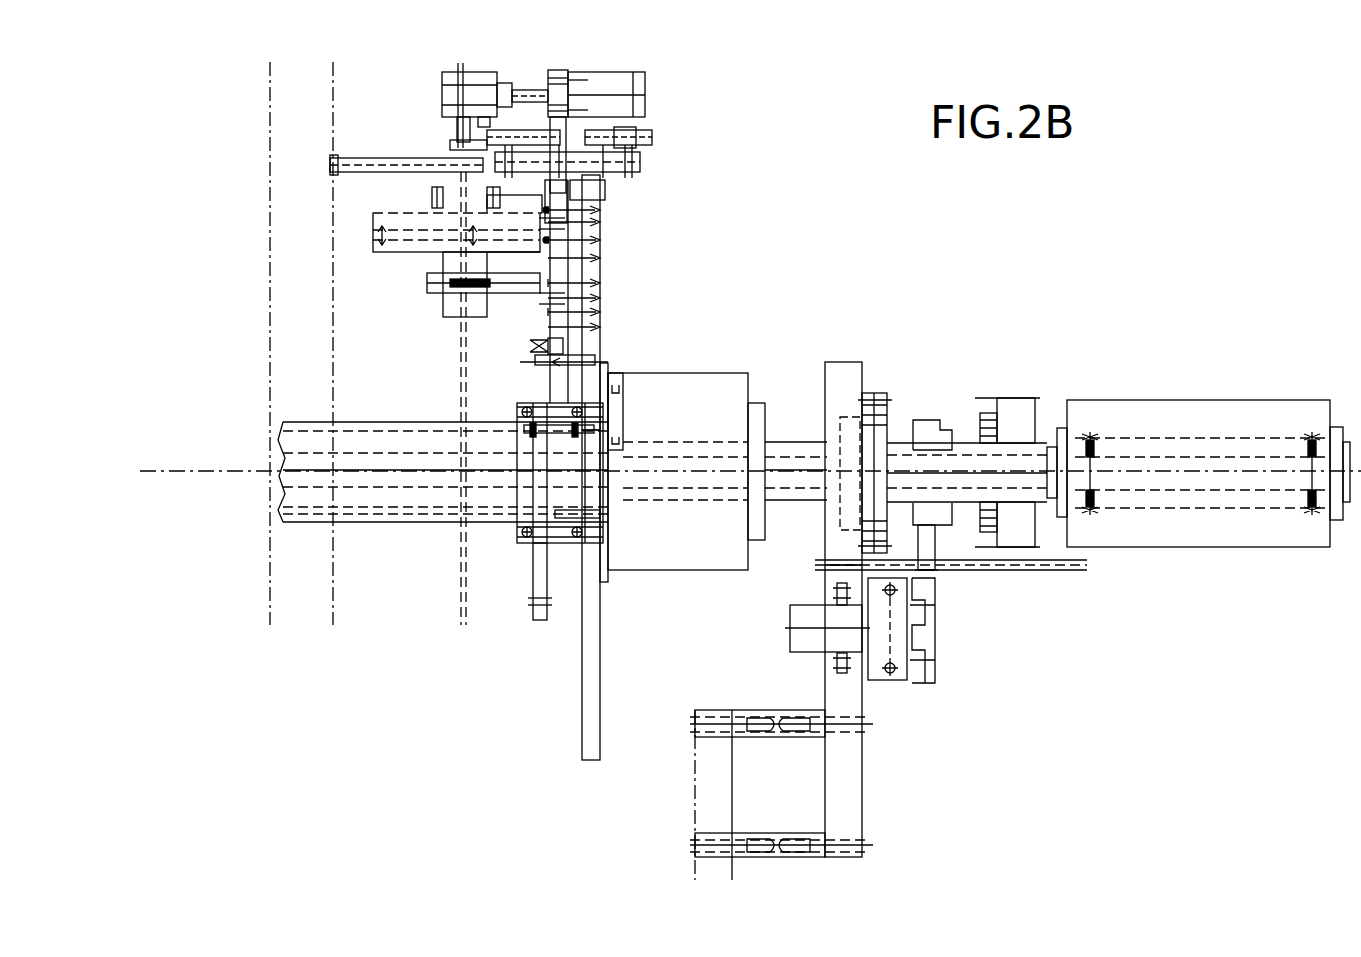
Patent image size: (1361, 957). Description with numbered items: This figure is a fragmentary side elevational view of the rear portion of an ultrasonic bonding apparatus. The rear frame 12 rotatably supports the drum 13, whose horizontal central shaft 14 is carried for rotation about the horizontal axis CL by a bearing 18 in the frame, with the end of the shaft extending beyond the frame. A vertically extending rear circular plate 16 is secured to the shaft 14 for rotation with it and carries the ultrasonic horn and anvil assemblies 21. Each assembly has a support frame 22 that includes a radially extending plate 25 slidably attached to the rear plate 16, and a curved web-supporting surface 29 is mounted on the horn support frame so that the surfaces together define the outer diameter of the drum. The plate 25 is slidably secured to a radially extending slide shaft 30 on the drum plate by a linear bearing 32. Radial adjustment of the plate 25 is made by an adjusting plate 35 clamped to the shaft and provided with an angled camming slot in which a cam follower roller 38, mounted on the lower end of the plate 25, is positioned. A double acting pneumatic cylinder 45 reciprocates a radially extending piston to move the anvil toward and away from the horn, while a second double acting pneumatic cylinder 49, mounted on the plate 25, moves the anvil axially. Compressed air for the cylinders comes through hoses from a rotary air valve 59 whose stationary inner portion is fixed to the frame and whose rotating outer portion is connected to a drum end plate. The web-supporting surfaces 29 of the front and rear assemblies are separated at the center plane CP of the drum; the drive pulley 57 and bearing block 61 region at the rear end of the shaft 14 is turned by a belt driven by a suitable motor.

The rear frame 12 is at (862, 773).
The drum 13 is at (600, 652).
The horizontal central shaft 14 is at (292, 422).
The rear circular plate 16 is at (603, 300).
The bearing 18 is at (845, 412).
The ultrasonic horn and anvil assembly 21 is at (408, 142).
The support frame 22 is at (638, 172).
The radially extending plate 25 is at (560, 70).
The curved web-supporting surface 29 is at (340, 160).
The slide shaft 30 is at (548, 348).
The linear bearing 32 is at (590, 208).
The adjusting plate 35 is at (533, 580).
The cam follower roller 38 is at (542, 340).
The double acting pneumatic cylinder 45 is at (448, 72).
The double acting pneumatic cylinder 49 is at (625, 70).
The drive motor 57 is at (1212, 547).
The rotary air valve 59 is at (663, 573).
The bearing block 61 is at (1010, 398).
The center plane CP is at (269, 265).
The horizontal axis CL is at (750, 472).